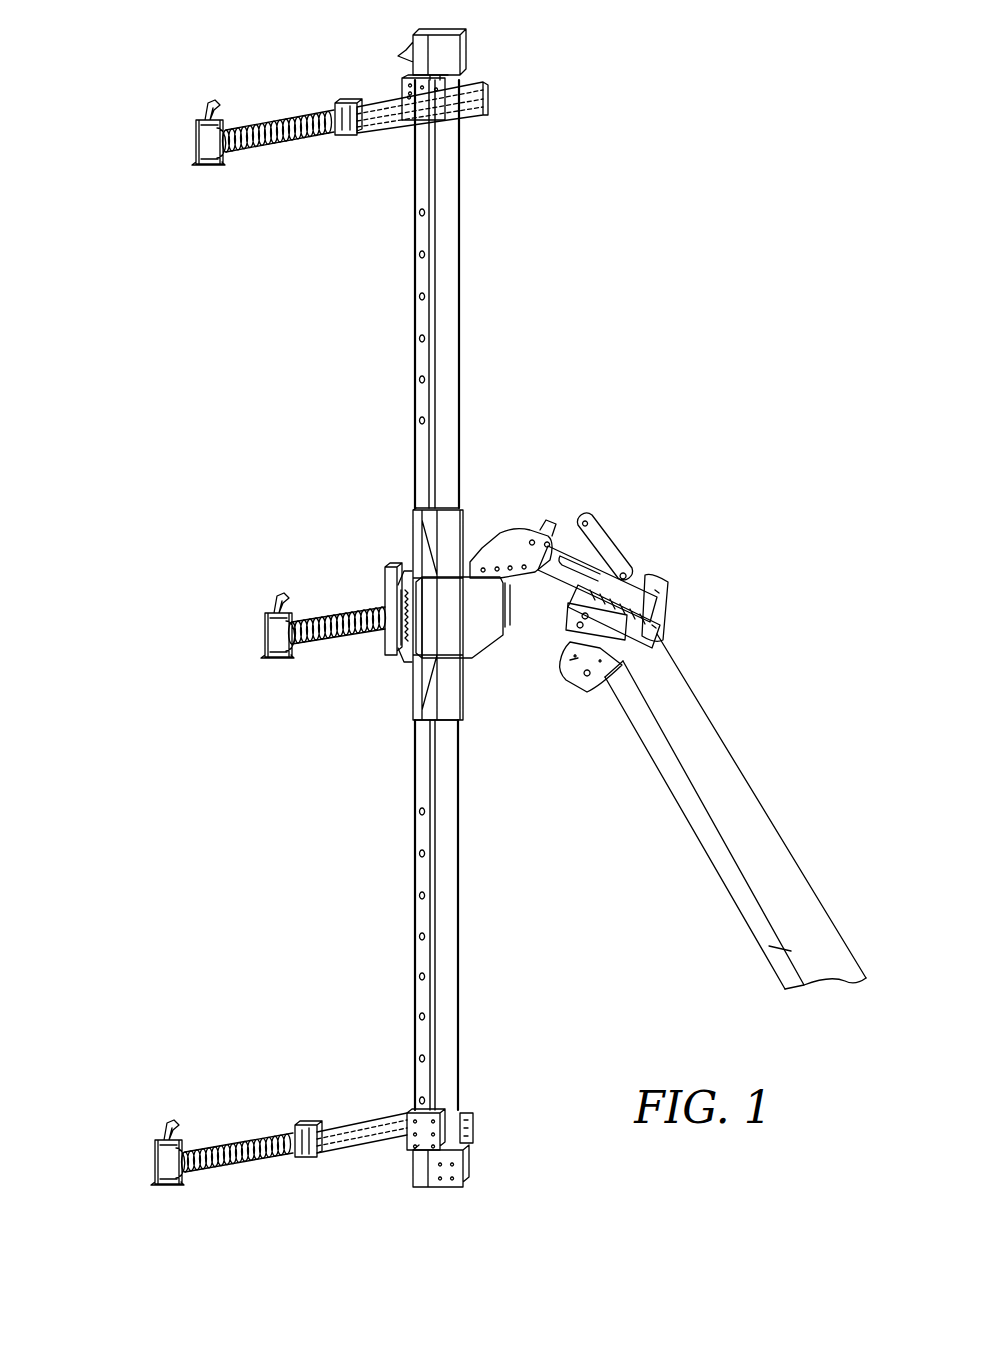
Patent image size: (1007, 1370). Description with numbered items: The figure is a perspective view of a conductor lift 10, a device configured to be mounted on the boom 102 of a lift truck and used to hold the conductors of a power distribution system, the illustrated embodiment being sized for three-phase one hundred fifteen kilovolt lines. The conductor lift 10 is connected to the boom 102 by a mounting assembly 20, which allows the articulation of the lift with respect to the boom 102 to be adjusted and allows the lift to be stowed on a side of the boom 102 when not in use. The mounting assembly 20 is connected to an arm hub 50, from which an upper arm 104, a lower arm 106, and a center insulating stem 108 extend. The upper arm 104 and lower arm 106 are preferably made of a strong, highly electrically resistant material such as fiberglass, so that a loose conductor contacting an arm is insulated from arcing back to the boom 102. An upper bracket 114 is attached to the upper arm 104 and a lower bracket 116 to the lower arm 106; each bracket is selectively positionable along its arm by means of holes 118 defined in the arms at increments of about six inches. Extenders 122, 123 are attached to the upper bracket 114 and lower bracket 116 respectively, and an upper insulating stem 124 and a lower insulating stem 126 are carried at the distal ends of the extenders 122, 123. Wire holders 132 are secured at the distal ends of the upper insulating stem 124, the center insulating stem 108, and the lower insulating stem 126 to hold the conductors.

The conductor lift 10 is at (690, 105).
The mounting assembly 20 is at (656, 524).
The arm hub 50 is at (383, 686).
The boom 102 is at (718, 748).
The upper arm 104 is at (453, 318).
The lower arm 106 is at (453, 858).
The center insulating stem 108 is at (352, 612).
The upper bracket 114 is at (487, 90).
The lower bracket 116 is at (473, 1125).
The holes 118 is at (418, 293).
The extender 122 is at (382, 105).
The extender 123 is at (365, 1124).
The upper insulating stem 124 is at (270, 122).
The lower insulating stem 126 is at (240, 1150).
The wire holders 132 is at (195, 142).